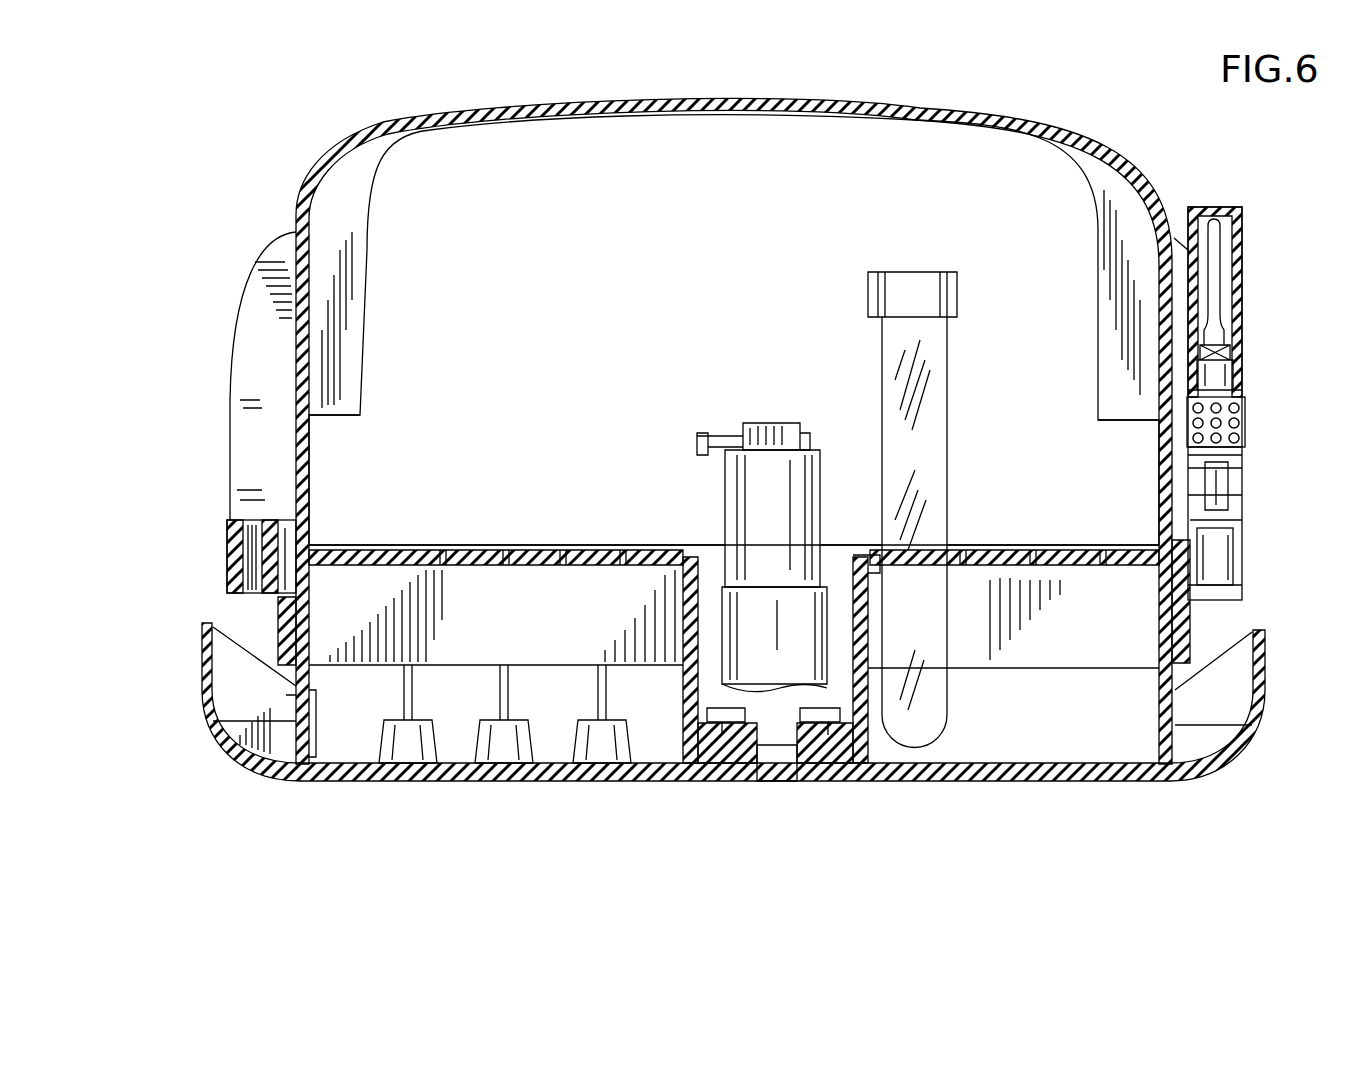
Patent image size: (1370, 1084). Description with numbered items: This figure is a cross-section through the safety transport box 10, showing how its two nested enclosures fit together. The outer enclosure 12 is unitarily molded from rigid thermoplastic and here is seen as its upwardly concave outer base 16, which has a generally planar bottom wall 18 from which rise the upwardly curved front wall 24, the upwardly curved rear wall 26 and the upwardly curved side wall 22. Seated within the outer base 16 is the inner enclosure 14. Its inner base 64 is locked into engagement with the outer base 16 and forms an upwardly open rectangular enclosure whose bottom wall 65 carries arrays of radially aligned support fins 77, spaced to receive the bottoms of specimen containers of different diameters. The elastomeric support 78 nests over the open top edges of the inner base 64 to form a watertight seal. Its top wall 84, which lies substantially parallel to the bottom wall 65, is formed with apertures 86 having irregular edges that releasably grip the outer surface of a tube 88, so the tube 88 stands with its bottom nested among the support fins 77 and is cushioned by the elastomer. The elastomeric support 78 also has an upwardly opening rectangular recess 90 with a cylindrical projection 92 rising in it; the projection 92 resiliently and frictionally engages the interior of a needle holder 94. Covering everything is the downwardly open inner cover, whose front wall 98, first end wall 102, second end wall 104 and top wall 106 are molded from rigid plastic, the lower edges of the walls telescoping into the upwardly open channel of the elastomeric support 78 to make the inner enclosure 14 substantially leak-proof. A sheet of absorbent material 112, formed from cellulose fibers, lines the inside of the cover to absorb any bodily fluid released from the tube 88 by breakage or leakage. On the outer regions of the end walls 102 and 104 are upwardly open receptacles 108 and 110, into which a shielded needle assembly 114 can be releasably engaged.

The safety transport box 10 is at (266, 126).
The inner enclosure 14 is at (317, 146).
The second end wall 104 is at (300, 212).
The top wall 106 is at (668, 100).
The absorbent material 112 is at (748, 122).
The front wall 98 is at (1098, 158).
The first end wall 102 is at (1152, 180).
The shielded needle assembly 114 is at (1245, 420).
The first upwardly open receptacle 108 is at (1238, 552).
The second upwardly open receptacle 110 is at (232, 548).
The front wall 24 is at (205, 632).
The inner base 64 is at (286, 695).
The outer enclosure 12 is at (216, 758).
The outer base 16 is at (243, 773).
The bottom wall 18 is at (510, 779).
The elastomeric support 78 is at (380, 571).
The top wall 84 is at (503, 565).
The apertures 86 is at (533, 565).
The rectangular recess 90 is at (700, 592).
The support fins 77 is at (582, 740).
The cylindrical projection 92 is at (768, 770).
The needle holder 94 is at (777, 564).
The tube 88 is at (927, 459).
The side wall 22 is at (1265, 650).
The rear wall 26 is at (1230, 690).
The bottom wall 65 is at (1064, 768).